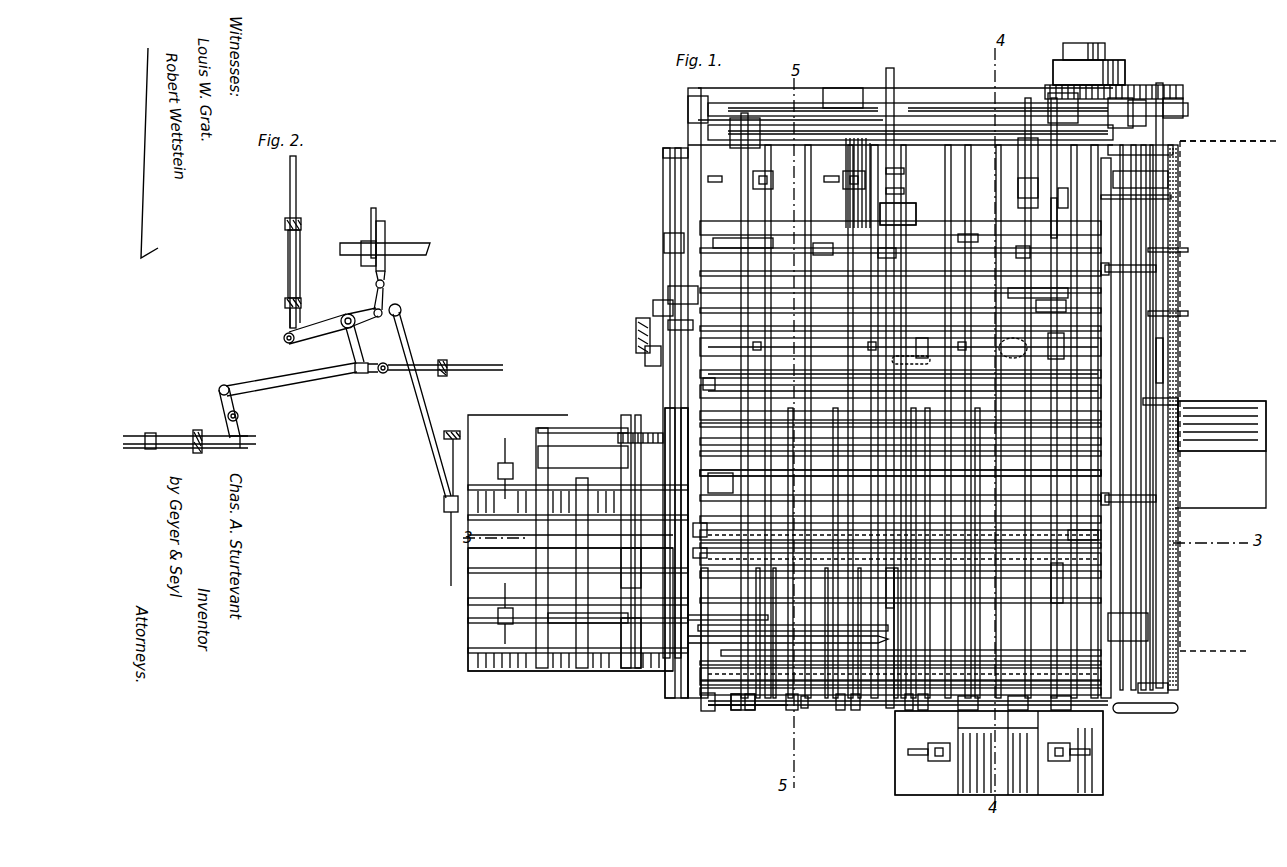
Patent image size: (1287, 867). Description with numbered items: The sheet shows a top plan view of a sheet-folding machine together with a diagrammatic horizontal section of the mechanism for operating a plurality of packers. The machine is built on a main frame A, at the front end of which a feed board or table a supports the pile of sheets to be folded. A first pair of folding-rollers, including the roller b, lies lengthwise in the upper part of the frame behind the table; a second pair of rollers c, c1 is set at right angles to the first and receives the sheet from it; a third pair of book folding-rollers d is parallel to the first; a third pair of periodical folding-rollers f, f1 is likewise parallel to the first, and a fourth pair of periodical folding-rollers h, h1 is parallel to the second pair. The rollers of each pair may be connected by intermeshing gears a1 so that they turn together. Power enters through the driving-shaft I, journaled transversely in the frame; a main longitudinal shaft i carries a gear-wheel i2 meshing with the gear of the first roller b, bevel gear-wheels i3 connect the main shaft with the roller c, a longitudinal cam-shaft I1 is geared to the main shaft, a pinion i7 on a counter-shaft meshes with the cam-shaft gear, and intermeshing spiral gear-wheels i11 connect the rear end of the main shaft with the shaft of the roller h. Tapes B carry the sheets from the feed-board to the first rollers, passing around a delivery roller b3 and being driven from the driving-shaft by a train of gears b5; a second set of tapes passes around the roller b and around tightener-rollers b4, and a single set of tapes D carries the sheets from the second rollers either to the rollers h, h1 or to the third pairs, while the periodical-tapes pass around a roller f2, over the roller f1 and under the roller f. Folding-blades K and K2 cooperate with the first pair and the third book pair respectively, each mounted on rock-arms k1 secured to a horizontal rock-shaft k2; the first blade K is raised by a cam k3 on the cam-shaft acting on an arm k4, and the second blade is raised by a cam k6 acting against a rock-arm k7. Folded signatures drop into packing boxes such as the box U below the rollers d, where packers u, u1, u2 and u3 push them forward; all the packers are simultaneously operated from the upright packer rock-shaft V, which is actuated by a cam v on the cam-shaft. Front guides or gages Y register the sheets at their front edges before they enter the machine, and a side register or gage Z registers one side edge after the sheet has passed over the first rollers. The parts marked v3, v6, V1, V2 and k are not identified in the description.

In FIG. 1, the guide v3 is at (843, 85).
In FIG. 1, the train of gears b5 is at (1120, 75).
In FIG. 1, the feed board a is at (1229, 133).
In FIG. 1, the rock-shaft k2 is at (952, 152).
In FIG. 1, the arm k4 is at (1020, 182).
In FIG. 1, the side register Z is at (908, 204).
In FIG. 1, the tapes B is at (958, 228).
In FIG. 1, the cam k3 is at (1012, 240).
In FIG. 1, the rod k is at (1061, 218).
In FIG. 1, the driving-shaft I is at (1060, 190).
In FIG. 1, the delivery roller b3 is at (660, 238).
In FIG. 1, the pinion i7 is at (712, 235).
In FIG. 1, the rock-arms k1 is at (555, 690).
In FIG. 1, the folding-roller c1 is at (878, 248).
In FIG. 1, the cam k6 is at (665, 282).
In FIG. 1, the rock-arm k7 is at (650, 300).
In FIG. 1, the gear-wheel i2 is at (665, 318).
In FIG. 1, the spiral gear-wheels i11 is at (630, 330).
In FIG. 1, the block v6 is at (640, 350).
In FIG. 1, the bevel gear-wheels i3 is at (912, 332).
In FIG. 1, the folding-blade K is at (925, 348).
In FIG. 1, the main longitudinal shaft i is at (978, 338).
In FIG. 1, the cam-shaft I1 is at (1060, 258).
In FIG. 2, the cam-shaft I1 is at (400, 238).
In FIG. 1, the folding-roller b is at (815, 400).
In FIG. 1, the intermeshing gears a1 is at (700, 380).
In FIG. 1, the front guides Y is at (1150, 270).
In FIG. 1, the roller f2 is at (1165, 360).
In FIG. 1, the bracket V1 is at (1222, 414).
In FIG. 1, the periodical folding-roller f is at (700, 525).
In FIG. 1, the periodical folding-roller f1 is at (700, 545).
In FIG. 1, the tapes D is at (640, 560).
In FIG. 1, the folding-roller c is at (1060, 565).
In FIG. 1, the book folding-roller d is at (1080, 530).
In FIG. 1, the periodical folding-roller h1 is at (586, 690).
In FIG. 1, the bracket V2 is at (460, 640).
In FIG. 1, the periodical folding-roller h is at (628, 660).
In FIG. 1, the main frame A is at (657, 680).
In FIG. 1, the tightener-rollers b4 is at (738, 703).
In FIG. 1, the packing box U is at (1007, 756).
In FIG. 1, the folding-blade K2 is at (900, 480).
In FIG. 2, the packer u3 is at (308, 288).
In FIG. 2, the cam v is at (375, 237).
In FIG. 2, the upright packer rock-shaft V is at (338, 312).
In FIG. 2, the packer u1 is at (436, 392).
In FIG. 2, the packer u2 is at (188, 460).
In FIG. 2, the packer u is at (460, 433).